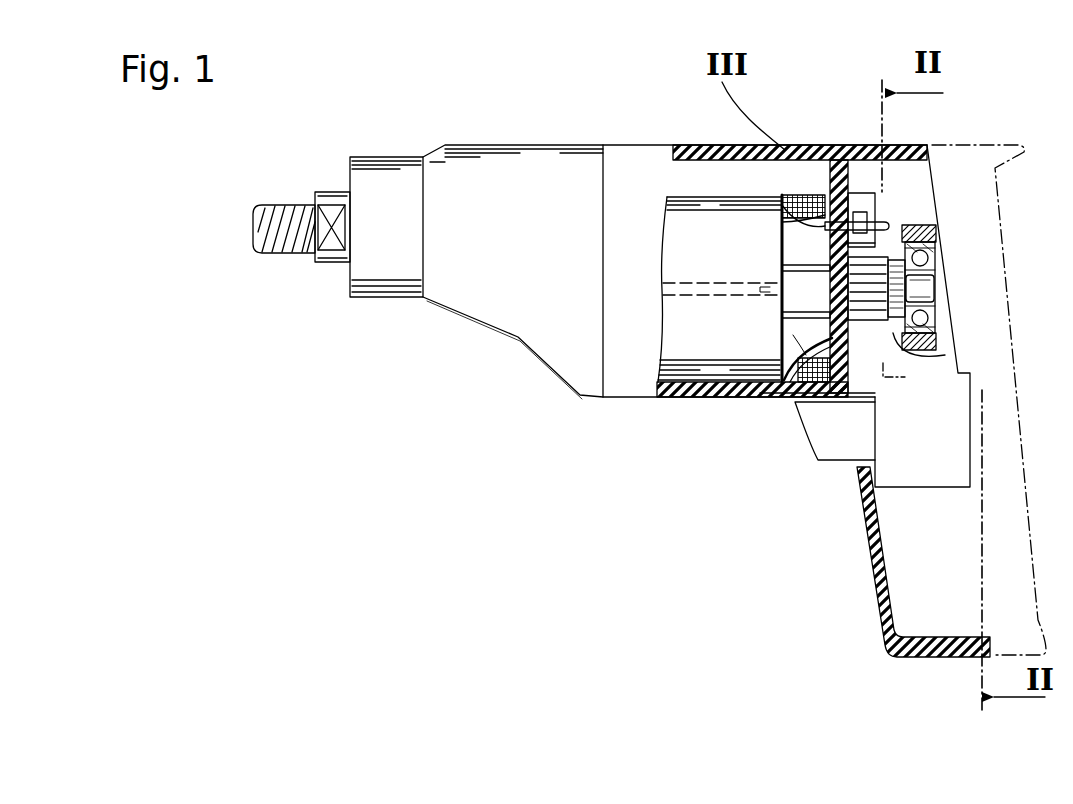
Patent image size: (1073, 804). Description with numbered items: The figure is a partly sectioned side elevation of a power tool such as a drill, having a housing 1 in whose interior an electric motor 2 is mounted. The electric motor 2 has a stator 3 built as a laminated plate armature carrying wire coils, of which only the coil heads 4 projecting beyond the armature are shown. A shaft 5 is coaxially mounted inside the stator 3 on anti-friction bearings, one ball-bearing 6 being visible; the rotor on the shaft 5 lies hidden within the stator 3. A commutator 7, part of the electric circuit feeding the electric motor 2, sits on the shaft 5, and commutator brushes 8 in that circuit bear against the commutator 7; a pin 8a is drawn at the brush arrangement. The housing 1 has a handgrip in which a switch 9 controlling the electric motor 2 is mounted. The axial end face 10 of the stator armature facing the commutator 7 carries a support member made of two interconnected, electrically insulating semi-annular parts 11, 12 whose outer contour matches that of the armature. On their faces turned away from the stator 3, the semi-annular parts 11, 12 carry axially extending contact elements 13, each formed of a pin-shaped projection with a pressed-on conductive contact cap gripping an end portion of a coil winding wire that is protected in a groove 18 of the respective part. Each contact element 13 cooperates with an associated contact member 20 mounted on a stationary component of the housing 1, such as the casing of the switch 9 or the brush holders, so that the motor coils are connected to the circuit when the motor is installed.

The housing 1 is at (612, 160).
The electric motor 2 is at (676, 140).
The stator 3 is at (678, 350).
The coil heads 4 is at (803, 380).
The shaft 5 is at (925, 293).
The ball-bearing 6 is at (930, 248).
The commutator 7 is at (940, 360).
The commutator brushes 8 is at (874, 248).
The pin 8a is at (857, 190).
The switch 9 is at (895, 463).
The axial end face 10 is at (785, 335).
The semi-annular part 11 is at (780, 224).
The semi-annular part 12 is at (802, 333).
The contact element 13 is at (880, 256).
The groove 18 is at (798, 400).
The contact members 20 is at (852, 180).